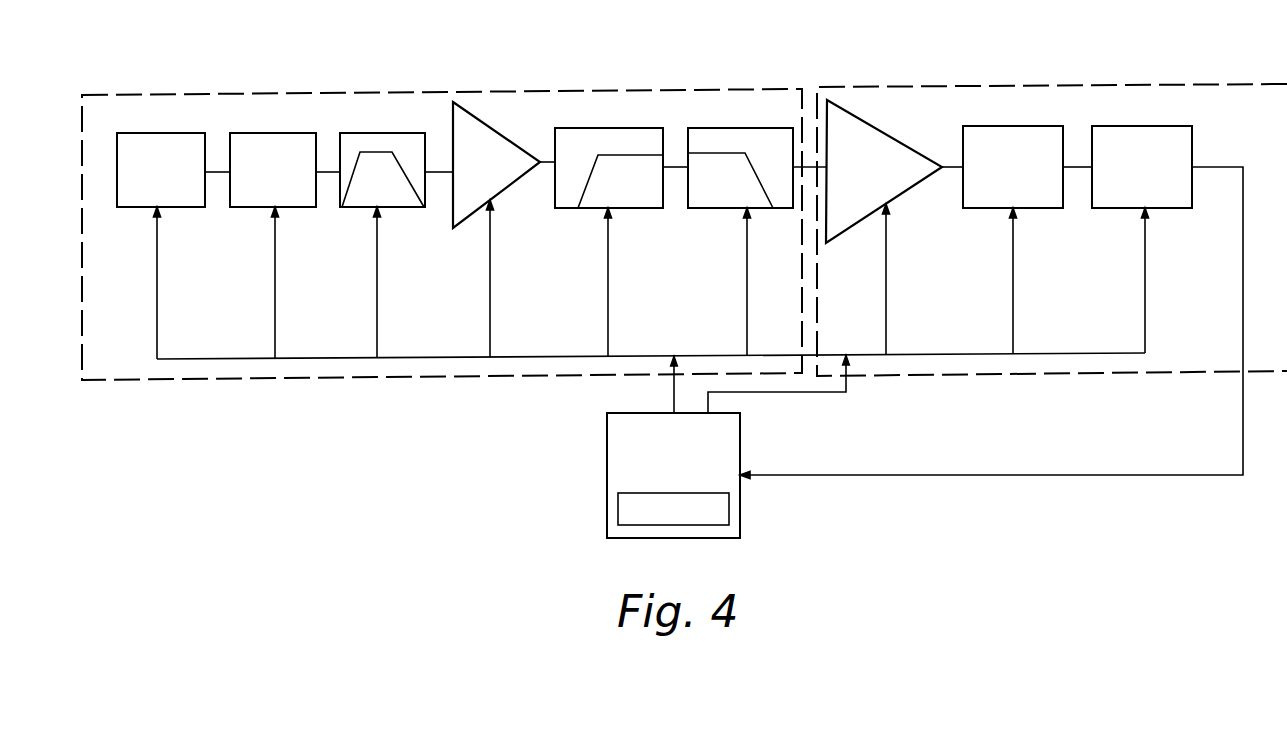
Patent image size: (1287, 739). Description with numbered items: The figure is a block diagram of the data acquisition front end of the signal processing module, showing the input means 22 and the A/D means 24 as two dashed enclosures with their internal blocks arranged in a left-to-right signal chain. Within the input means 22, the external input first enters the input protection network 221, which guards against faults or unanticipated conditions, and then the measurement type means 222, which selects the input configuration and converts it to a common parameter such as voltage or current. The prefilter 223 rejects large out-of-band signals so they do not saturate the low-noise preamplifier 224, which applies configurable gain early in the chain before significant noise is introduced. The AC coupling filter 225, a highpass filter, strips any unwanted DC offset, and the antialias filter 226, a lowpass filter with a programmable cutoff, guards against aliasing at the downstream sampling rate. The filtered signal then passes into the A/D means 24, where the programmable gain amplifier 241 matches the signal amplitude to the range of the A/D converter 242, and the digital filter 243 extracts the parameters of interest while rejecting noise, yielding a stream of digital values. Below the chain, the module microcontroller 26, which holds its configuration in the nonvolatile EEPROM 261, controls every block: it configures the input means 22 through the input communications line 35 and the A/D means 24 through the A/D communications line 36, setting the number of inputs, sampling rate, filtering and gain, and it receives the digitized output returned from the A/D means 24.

The input means 22 is at (180, 380).
The A/D means 24 is at (923, 376).
The input protection network 221 is at (115, 202).
The measurement type means 222 is at (247, 208).
The prefilter 223 is at (362, 208).
The low-noise preamplifier 224 is at (458, 228).
The AC coupling filter 225 is at (615, 128).
The antialias filter 226 is at (722, 209).
The programmable gain amplifier 241 is at (902, 190).
The A/D converter 242 is at (990, 208).
The digital filter 243 is at (1107, 208).
The module microcontroller 26 is at (605, 503).
The EEPROM 261 is at (729, 513).
The input communications line 35 is at (672, 387).
The A/D communications line 36 is at (780, 392).